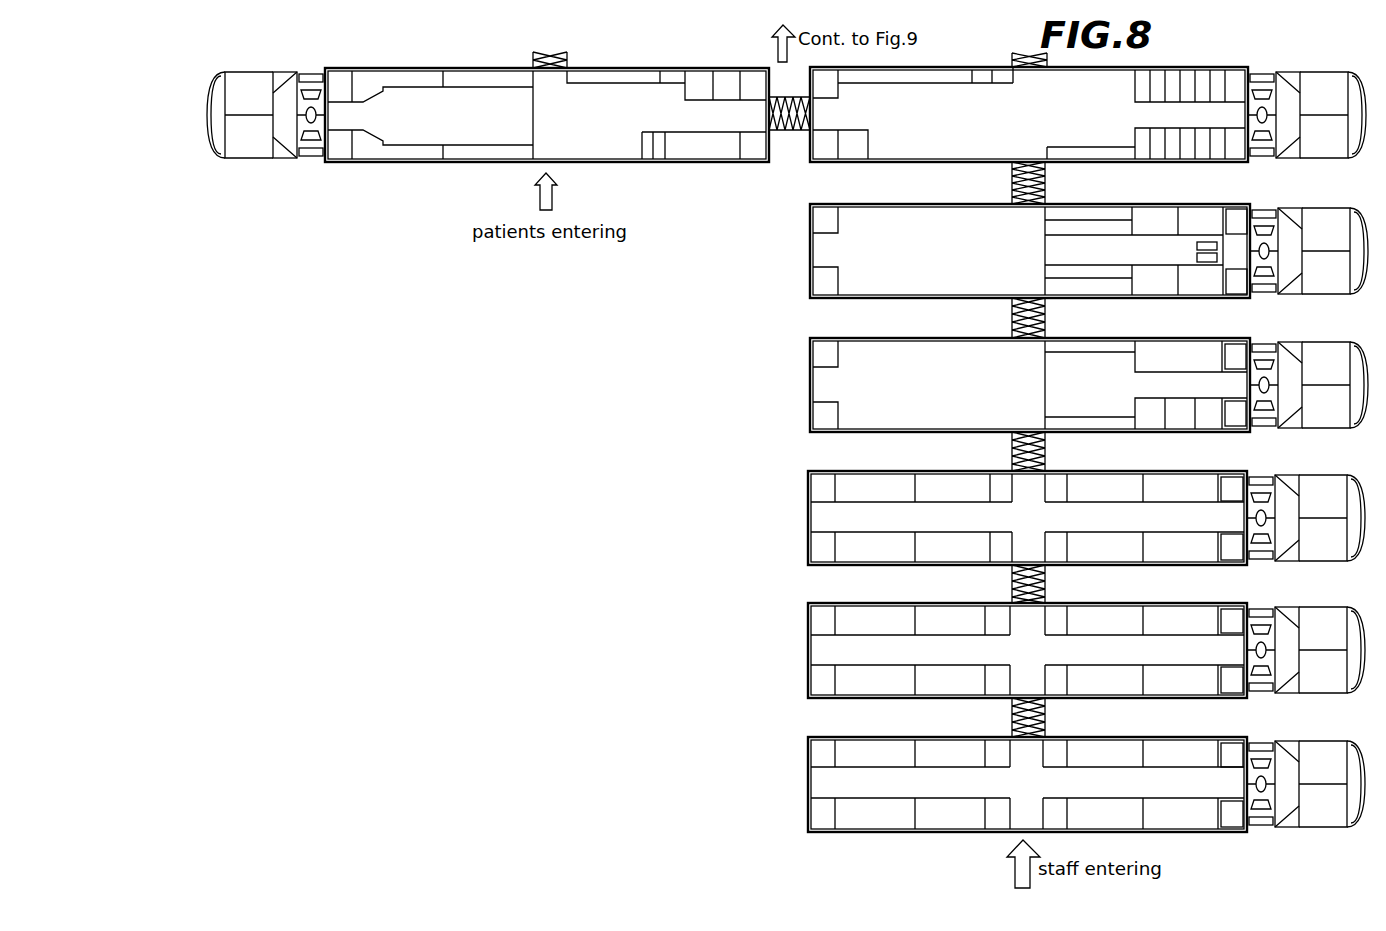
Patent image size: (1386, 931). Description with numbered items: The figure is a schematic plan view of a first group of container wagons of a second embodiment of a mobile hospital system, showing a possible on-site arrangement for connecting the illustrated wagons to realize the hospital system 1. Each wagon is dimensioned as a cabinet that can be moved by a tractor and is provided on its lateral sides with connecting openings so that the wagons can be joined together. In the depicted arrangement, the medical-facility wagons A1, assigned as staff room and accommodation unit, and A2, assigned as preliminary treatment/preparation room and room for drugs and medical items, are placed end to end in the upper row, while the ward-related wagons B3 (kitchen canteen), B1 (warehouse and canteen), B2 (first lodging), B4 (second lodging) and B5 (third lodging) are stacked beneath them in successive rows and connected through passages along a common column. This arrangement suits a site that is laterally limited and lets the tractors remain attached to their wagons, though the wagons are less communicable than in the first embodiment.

The hospital system 1 is at (945, 58).
The staff room and accommodation unit wagon A1 is at (384, 68).
The preliminary treatment/preparation room and drug room wagon A2 is at (1190, 68).
The warehouse and canteen wagon B1 is at (1190, 338).
The first lodging wagon B2 is at (1187, 472).
The kitchen canteen wagon B3 is at (1192, 204).
The second lodging wagon B4 is at (1173, 603).
The third lodging wagon B5 is at (1168, 737).